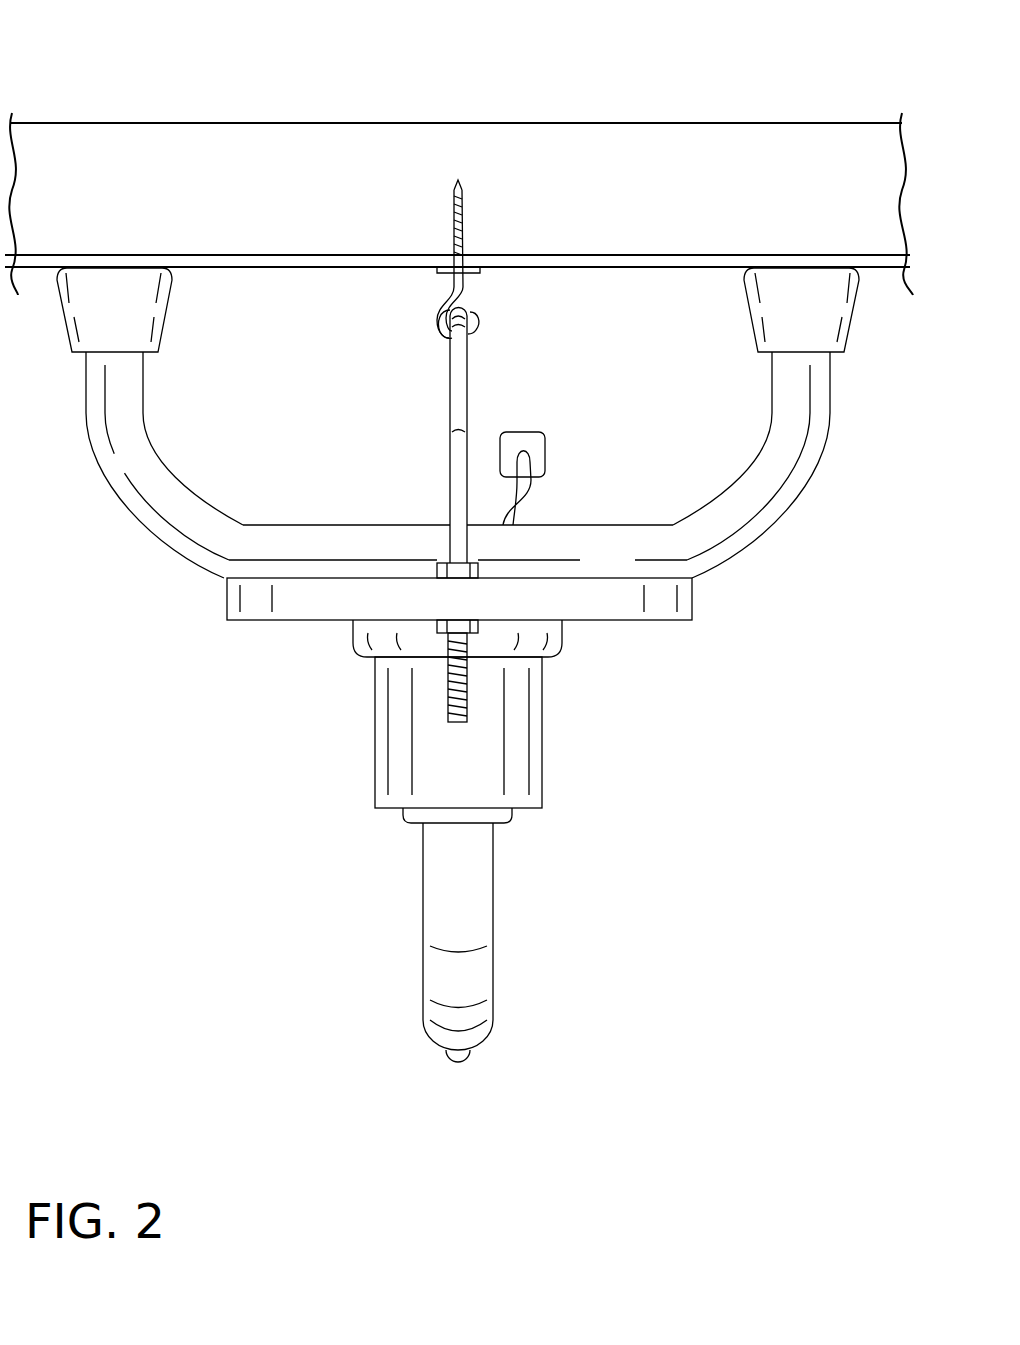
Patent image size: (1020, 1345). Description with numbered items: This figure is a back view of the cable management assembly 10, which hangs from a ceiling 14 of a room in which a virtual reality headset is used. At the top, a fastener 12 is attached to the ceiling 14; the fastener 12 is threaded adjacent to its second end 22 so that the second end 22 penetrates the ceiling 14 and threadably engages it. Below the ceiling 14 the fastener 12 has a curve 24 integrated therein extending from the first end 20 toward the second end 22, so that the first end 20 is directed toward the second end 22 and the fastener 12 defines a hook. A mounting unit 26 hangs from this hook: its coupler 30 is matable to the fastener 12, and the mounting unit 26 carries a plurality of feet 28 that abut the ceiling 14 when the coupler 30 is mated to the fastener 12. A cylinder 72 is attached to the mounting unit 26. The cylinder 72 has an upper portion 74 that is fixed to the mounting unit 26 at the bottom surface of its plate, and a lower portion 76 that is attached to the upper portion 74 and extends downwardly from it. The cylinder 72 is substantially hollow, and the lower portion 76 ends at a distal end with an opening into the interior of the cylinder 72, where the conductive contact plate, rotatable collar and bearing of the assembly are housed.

The cable management assembly 10 is at (145, 650).
The fastener 12 is at (453, 217).
The ceiling 14 is at (880, 267).
The first end 20 is at (480, 305).
The second end 22 is at (457, 180).
The curve 24 is at (435, 338).
The mounting unit 26 is at (762, 558).
The feet 28 is at (109, 267).
The coupler 30 is at (450, 459).
The cylinder 72 is at (377, 712).
The upper portion 74 is at (562, 656).
The lower portion 76 is at (560, 745).